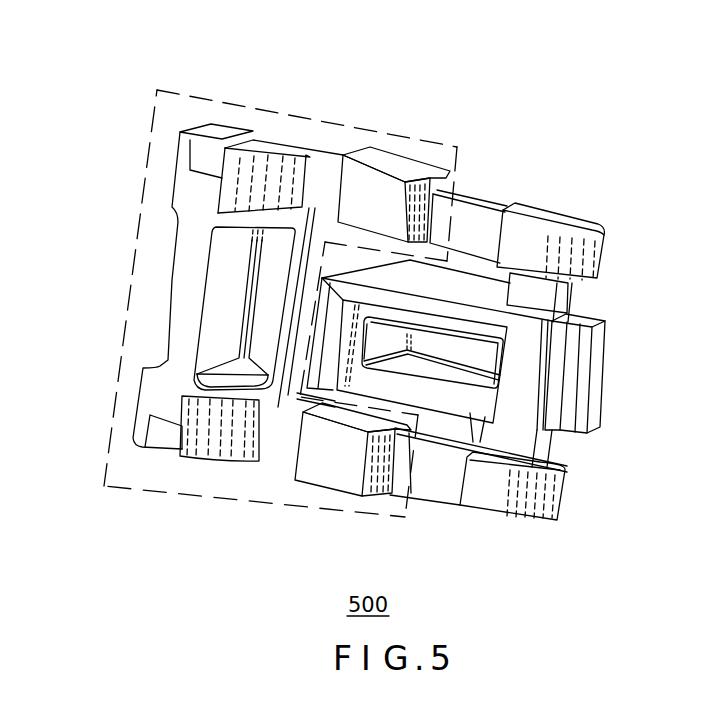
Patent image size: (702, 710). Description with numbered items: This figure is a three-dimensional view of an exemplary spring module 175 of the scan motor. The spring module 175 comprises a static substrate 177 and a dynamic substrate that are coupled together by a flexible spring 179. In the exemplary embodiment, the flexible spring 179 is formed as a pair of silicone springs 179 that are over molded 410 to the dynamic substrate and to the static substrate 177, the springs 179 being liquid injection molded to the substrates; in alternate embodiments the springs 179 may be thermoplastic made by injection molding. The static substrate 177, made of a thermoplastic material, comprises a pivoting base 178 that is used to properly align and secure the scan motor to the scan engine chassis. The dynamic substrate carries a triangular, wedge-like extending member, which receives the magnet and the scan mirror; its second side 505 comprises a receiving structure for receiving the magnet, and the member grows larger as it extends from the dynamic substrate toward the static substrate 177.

The spring module 175 is at (482, 113).
The static substrate 177 is at (155, 124).
The pivoting base 178 is at (192, 272).
The flexible spring 179 is at (478, 232).
The over molded 410 is at (387, 165).
The second side 505 is at (474, 455).